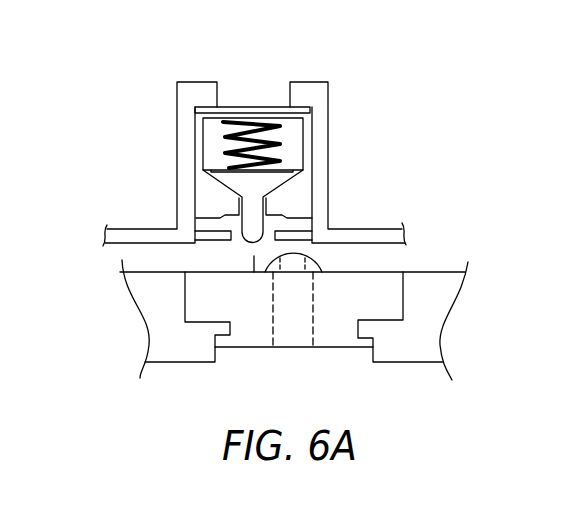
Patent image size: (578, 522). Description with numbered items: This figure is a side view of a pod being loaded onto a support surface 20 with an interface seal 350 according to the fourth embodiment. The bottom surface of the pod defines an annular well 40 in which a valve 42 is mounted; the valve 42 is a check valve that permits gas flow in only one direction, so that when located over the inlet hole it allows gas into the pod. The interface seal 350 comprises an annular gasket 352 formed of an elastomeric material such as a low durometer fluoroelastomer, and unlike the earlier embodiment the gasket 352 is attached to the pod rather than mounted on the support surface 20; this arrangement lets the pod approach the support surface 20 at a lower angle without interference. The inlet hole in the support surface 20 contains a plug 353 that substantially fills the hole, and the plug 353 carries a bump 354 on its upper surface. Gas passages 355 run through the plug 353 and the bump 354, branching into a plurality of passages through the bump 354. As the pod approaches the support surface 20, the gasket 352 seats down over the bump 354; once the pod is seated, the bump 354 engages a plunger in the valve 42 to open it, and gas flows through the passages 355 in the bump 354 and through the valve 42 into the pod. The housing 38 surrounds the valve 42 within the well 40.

The valve housing 38 is at (310, 92).
The valve 42 is at (298, 140).
The annular well 40 is at (297, 199).
The annular gasket 352 is at (223, 237).
The plug 353 is at (382, 283).
The support surface 20 is at (158, 315).
The bump 354 is at (322, 258).
The gas passages 355 is at (292, 333).
The interface seal 350 is at (254, 256).